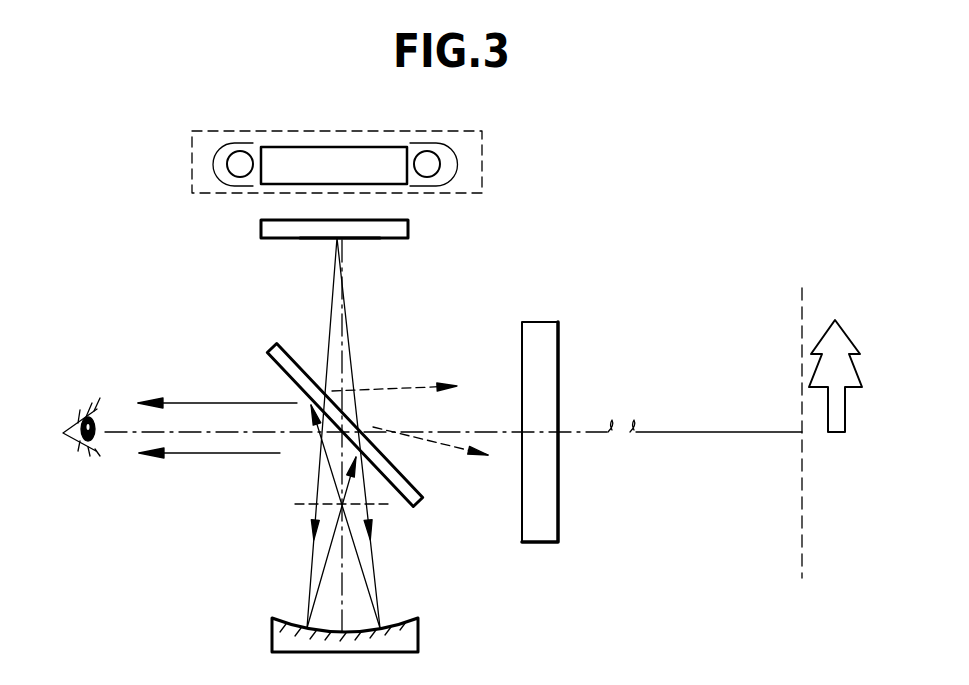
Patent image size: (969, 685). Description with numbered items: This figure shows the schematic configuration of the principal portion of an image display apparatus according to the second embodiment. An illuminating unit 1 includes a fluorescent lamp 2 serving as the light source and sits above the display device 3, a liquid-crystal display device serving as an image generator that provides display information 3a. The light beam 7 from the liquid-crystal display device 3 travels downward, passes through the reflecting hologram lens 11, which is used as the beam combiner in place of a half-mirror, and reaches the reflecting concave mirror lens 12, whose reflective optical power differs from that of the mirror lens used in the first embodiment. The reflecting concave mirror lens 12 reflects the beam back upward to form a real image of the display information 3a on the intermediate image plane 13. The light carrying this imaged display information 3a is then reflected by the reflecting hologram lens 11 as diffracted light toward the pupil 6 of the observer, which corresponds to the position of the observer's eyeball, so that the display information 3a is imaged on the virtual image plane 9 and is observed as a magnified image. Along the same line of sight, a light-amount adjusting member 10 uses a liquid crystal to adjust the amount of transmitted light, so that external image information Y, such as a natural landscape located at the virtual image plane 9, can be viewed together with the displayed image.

The illuminating unit 1 is at (481, 132).
The fluorescent lamp 2 is at (443, 166).
The display device 3 is at (408, 228).
The display information 3a is at (384, 238).
The pupil 6 is at (93, 387).
The light beam 7 is at (350, 352).
The virtual image plane 9 is at (798, 340).
The light-amount adjusting member 10 is at (545, 542).
The reflecting hologram lens 11 is at (275, 343).
The reflecting concave mirror lens 12 is at (418, 634).
The intermediate image plane 13 is at (295, 504).
The image information Y is at (846, 325).